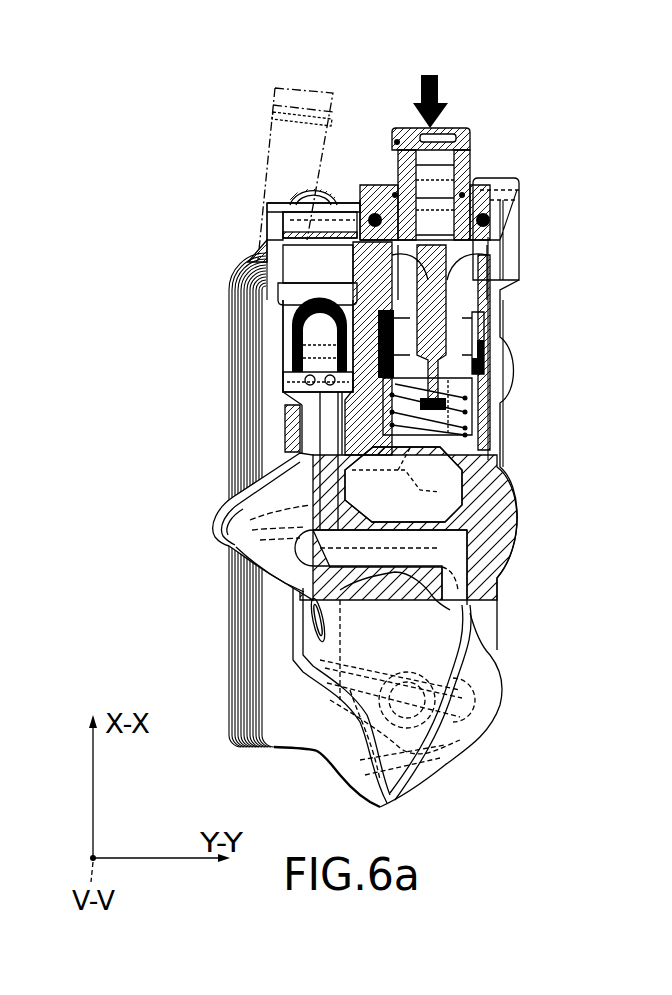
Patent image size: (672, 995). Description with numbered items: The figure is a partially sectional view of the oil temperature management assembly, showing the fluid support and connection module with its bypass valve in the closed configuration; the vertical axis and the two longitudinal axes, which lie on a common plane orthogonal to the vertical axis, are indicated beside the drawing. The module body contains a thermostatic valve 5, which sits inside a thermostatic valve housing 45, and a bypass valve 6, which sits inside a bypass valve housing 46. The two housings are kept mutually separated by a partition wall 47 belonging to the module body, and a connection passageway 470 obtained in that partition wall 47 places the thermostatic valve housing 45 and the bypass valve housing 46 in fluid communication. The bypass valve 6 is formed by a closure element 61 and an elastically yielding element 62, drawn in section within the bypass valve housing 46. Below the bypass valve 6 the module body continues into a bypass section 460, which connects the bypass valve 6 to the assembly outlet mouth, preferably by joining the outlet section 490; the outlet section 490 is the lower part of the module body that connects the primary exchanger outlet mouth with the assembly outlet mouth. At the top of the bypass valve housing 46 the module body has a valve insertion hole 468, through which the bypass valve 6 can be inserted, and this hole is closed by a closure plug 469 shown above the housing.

The thermostatic valve 5 is at (474, 289).
The bypass valve 6 is at (308, 275).
The thermostatic valve housing 45 is at (472, 394).
The bypass valve housing 46 is at (227, 422).
The partition wall 47 is at (482, 320).
The closure element 61 is at (305, 292).
The elastically yielding element 62 is at (300, 338).
The bypass section 460 is at (216, 524).
The valve insertion hole 468 is at (270, 216).
The closure plug 469 is at (310, 228).
The connection passageway 470 is at (358, 215).
The outlet section 490 is at (255, 570).